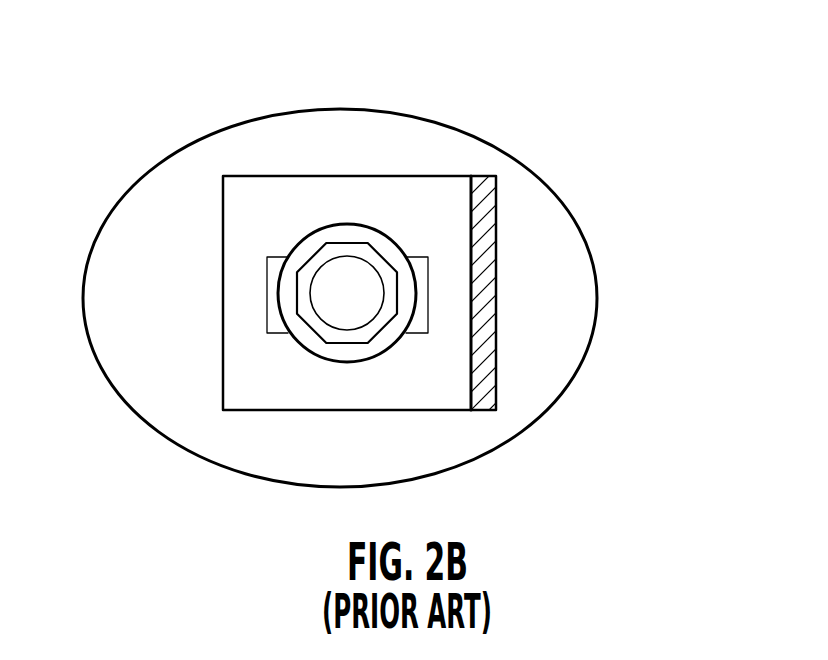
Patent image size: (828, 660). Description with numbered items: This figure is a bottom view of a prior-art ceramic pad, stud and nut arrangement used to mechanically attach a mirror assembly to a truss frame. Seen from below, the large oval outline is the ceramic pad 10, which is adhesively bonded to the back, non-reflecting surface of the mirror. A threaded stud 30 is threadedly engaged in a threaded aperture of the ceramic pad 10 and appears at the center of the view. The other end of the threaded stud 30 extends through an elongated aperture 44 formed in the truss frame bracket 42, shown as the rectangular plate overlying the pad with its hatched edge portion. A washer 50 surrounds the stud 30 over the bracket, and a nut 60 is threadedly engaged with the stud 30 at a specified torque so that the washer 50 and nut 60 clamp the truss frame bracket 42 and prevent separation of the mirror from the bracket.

The ceramic pad 10 is at (594, 281).
The threaded stud 30 is at (345, 310).
The truss frame bracket 42 is at (438, 192).
The elongated aperture 44 is at (432, 265).
The washer 50 is at (362, 225).
The nut 60 is at (388, 325).